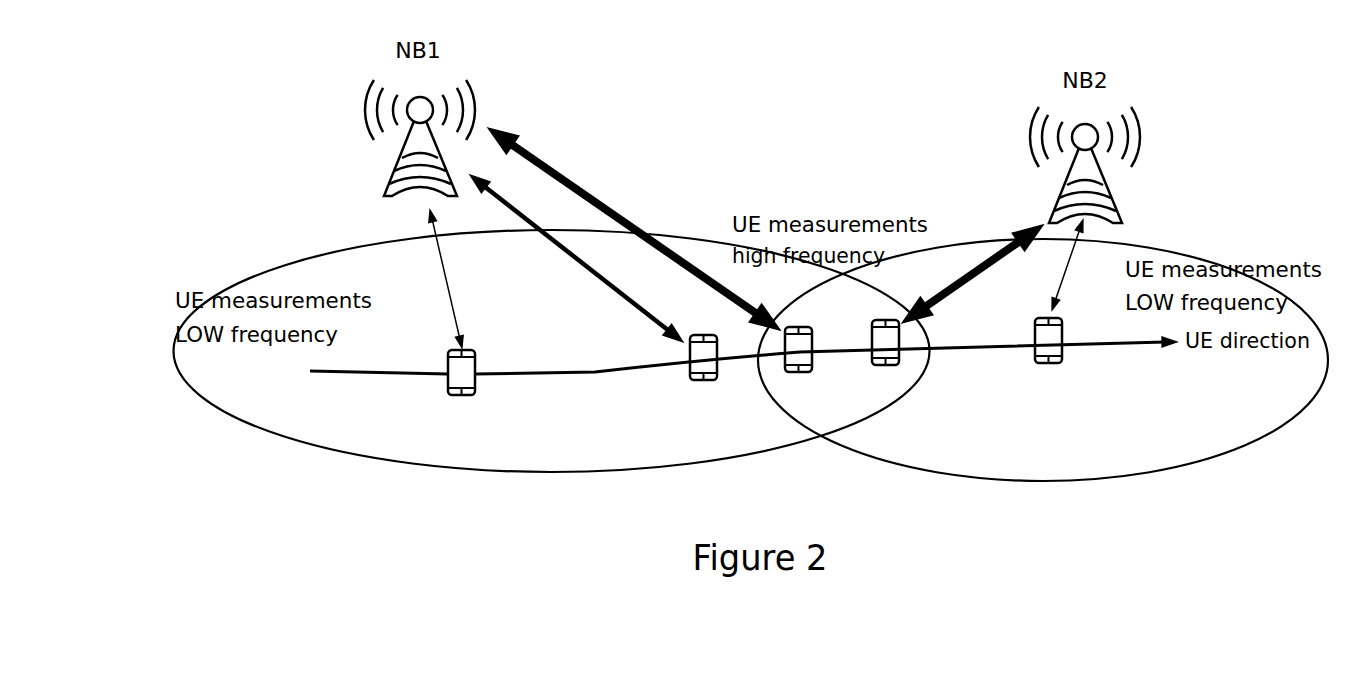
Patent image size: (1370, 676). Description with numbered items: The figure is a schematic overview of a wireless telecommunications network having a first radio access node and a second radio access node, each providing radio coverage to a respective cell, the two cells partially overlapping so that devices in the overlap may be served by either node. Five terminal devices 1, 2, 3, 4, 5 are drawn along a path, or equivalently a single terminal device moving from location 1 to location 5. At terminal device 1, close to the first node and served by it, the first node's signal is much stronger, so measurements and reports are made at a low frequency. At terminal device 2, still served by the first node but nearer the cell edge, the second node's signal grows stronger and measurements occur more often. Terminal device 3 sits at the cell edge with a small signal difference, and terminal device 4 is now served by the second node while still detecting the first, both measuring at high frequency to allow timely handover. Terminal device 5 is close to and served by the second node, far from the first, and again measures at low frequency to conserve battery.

The terminal device 1 is at (461, 389).
The terminal device 2 is at (703, 376).
The terminal device 3 is at (798, 365).
The terminal device 4 is at (885, 360).
The terminal device 5 is at (1048, 359).